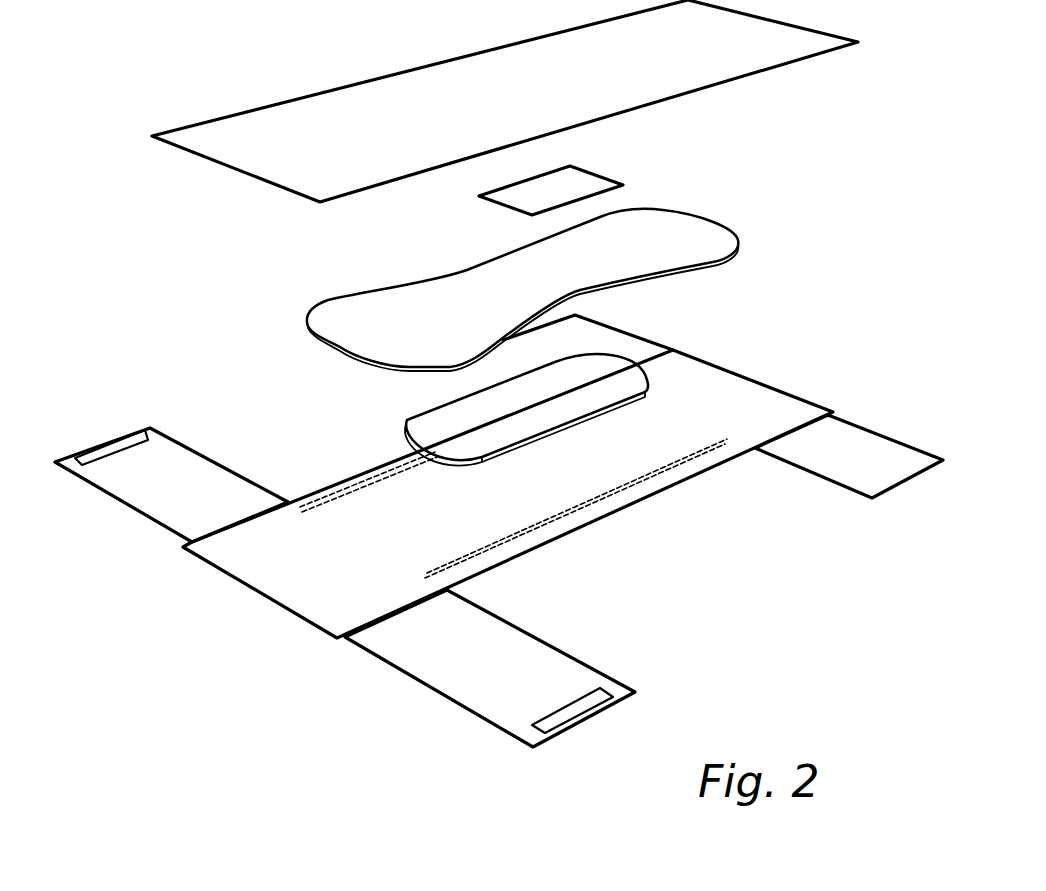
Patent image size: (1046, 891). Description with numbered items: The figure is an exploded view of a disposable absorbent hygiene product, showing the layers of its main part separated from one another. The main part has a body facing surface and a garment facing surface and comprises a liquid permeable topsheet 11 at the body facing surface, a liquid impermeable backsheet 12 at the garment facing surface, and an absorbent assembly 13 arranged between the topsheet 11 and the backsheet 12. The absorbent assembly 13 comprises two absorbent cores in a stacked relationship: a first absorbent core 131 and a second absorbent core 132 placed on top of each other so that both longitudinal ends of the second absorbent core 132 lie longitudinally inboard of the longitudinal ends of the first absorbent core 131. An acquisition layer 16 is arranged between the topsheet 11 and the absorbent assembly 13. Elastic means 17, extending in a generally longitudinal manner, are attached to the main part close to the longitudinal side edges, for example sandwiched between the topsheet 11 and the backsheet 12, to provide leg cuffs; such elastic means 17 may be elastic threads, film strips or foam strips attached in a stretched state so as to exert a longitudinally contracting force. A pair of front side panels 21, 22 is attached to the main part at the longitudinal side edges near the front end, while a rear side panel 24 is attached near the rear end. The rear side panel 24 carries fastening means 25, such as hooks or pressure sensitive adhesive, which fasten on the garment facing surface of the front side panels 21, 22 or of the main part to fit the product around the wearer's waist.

The liquid permeable topsheet 11 is at (295, 120).
The acquisition layer 16 is at (597, 173).
The first absorbent core 131 is at (697, 225).
The second absorbent core 132 is at (412, 418).
The absorbent assembly 13 is at (547, 314).
The front side panel 21 is at (622, 338).
The front side panel 22 is at (877, 457).
The elastic means 17 is at (353, 490).
The liquid impermeable backsheet 12 is at (595, 523).
The rear side panel 24 is at (473, 677).
The fastening means 25 is at (530, 733).